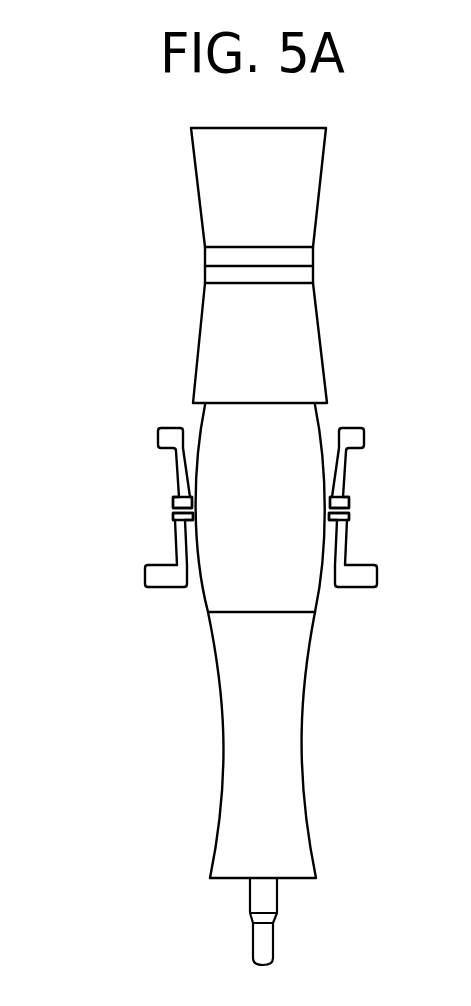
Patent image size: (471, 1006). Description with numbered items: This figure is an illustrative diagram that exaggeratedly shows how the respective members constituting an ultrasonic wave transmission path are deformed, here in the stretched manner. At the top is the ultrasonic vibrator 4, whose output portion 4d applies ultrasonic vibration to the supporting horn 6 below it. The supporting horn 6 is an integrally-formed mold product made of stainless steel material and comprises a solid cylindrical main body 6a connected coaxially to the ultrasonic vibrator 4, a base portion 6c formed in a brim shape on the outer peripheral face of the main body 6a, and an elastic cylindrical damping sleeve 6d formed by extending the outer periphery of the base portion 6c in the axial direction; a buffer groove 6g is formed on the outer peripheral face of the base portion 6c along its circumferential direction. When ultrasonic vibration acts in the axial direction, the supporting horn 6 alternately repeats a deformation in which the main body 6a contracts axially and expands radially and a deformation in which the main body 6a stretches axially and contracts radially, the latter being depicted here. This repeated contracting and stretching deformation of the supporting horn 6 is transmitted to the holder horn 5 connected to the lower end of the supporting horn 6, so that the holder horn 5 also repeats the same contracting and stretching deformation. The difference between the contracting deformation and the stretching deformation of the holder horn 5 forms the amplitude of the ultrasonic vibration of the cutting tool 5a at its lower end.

The ultrasonic vibrator 4 is at (272, 265).
The output portion 4d is at (308, 366).
The holder horn 5 is at (272, 757).
The cutting tool 5a is at (262, 946).
The supporting horn 6 is at (254, 519).
The main body 6a is at (222, 472).
The base portion 6c is at (349, 538).
The damping sleeve 6d is at (347, 468).
The buffer groove 6g is at (347, 516).